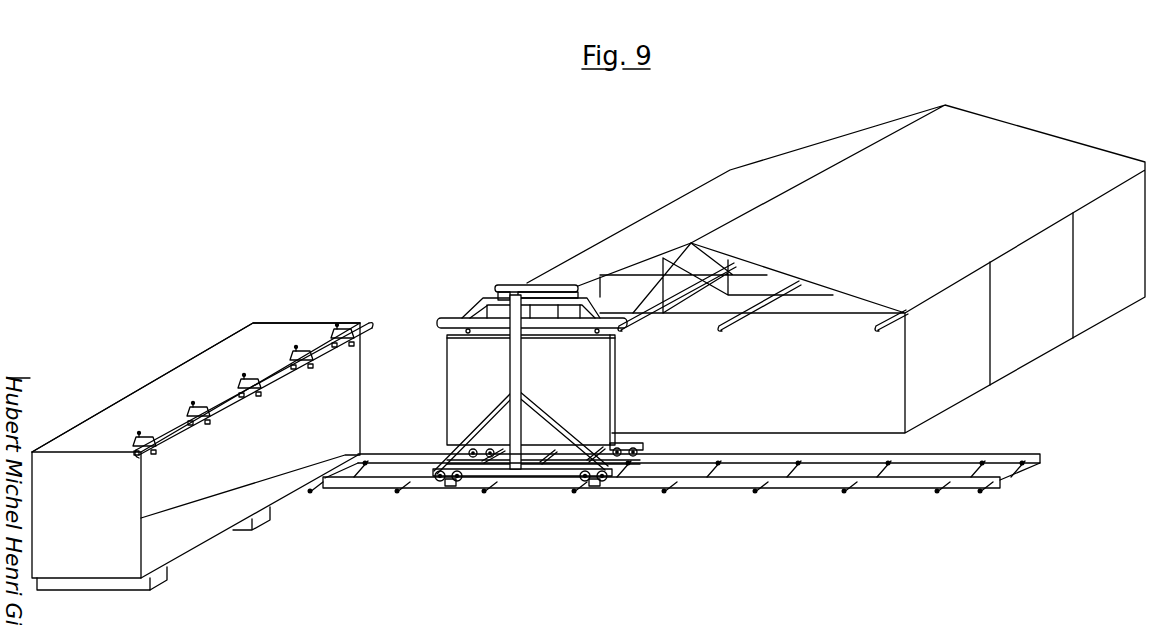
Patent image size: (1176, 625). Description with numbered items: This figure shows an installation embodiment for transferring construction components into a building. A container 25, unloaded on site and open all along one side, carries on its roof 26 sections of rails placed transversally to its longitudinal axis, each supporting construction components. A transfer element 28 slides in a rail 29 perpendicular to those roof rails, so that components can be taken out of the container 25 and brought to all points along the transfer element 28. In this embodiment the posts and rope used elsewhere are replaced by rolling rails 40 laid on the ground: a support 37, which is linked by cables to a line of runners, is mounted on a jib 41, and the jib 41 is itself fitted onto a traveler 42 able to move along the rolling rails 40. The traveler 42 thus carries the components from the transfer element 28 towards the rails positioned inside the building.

The container 25 is at (278, 482).
The roof 26 is at (286, 343).
The transfer element 28 is at (330, 370).
The rail 29 is at (358, 320).
The support 37 is at (451, 317).
The rolling rails 40 is at (425, 487).
The jib 41 is at (513, 317).
The traveler 42 is at (547, 470).